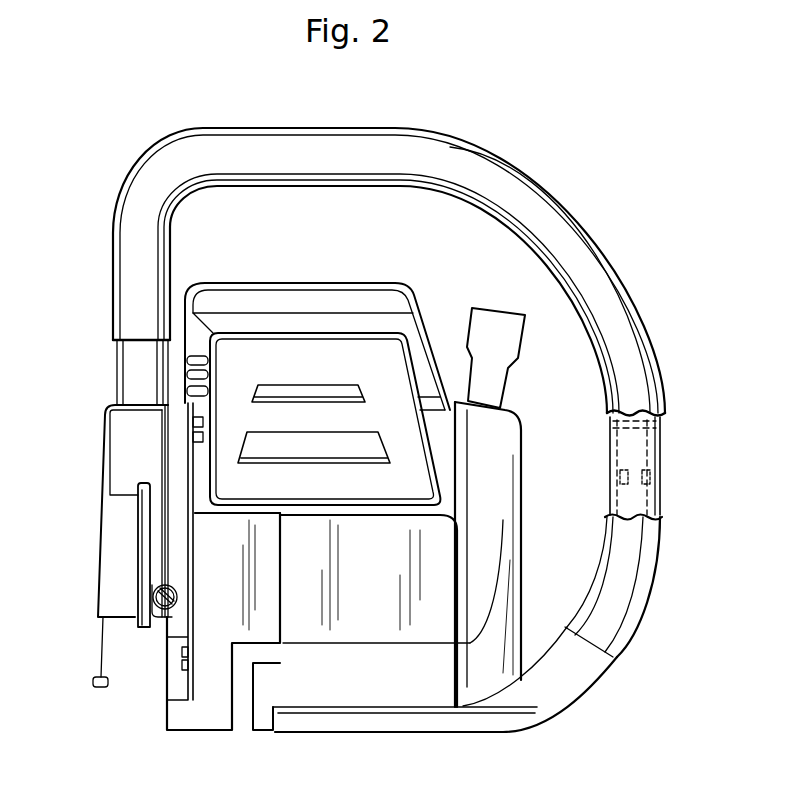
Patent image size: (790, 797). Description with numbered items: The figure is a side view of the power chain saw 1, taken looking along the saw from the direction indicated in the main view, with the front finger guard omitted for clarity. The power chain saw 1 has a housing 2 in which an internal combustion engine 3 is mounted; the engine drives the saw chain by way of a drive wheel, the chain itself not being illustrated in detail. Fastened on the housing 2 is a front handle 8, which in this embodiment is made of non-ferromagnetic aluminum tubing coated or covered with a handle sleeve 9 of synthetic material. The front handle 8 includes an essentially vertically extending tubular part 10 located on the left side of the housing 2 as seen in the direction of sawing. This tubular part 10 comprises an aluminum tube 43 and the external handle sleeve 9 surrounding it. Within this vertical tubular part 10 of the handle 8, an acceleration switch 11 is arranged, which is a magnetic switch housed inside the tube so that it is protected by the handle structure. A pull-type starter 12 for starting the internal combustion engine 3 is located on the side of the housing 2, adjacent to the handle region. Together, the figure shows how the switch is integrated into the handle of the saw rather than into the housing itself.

The power chain saw 1 is at (126, 162).
The housing 2 is at (105, 437).
The internal combustion engine 3 is at (188, 392).
The front handle 8 is at (397, 176).
The handle sleeve 9 is at (113, 341).
The tubular part 10 is at (667, 392).
The acceleration switch 11 is at (668, 441).
The pull-type starter 12 is at (479, 318).
The aluminum tube 43 is at (125, 369).